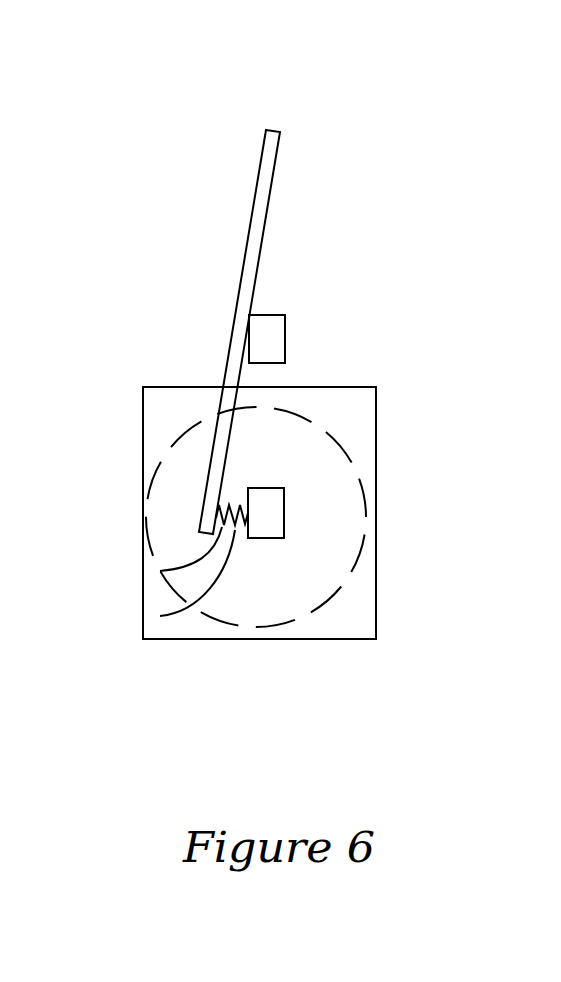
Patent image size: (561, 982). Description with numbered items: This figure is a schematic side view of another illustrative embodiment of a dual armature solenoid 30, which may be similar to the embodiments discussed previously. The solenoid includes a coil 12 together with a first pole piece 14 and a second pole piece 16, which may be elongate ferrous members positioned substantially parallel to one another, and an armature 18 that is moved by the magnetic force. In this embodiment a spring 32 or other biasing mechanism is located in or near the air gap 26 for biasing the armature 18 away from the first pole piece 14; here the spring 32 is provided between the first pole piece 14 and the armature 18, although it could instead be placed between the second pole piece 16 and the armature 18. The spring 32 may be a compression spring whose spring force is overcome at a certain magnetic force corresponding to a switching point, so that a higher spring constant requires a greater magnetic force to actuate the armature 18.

The dual armature solenoid 30 is at (406, 92).
The coil 12 is at (319, 457).
The first armature 18 is at (251, 262).
The second pole piece 16 is at (285, 338).
The first pole piece 14 is at (284, 513).
The spring 32 is at (160, 571).
The air gap 26 is at (160, 616).